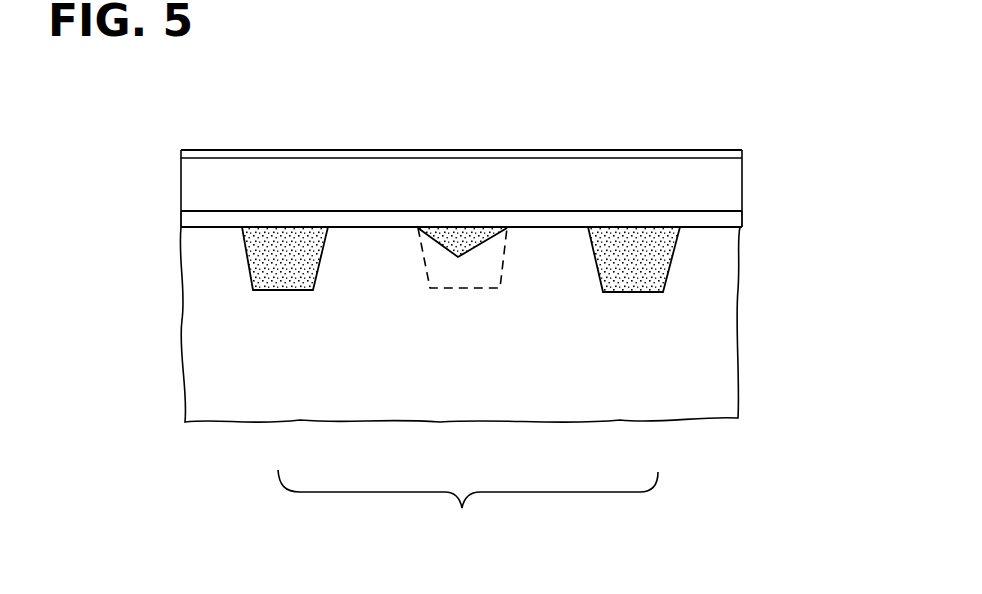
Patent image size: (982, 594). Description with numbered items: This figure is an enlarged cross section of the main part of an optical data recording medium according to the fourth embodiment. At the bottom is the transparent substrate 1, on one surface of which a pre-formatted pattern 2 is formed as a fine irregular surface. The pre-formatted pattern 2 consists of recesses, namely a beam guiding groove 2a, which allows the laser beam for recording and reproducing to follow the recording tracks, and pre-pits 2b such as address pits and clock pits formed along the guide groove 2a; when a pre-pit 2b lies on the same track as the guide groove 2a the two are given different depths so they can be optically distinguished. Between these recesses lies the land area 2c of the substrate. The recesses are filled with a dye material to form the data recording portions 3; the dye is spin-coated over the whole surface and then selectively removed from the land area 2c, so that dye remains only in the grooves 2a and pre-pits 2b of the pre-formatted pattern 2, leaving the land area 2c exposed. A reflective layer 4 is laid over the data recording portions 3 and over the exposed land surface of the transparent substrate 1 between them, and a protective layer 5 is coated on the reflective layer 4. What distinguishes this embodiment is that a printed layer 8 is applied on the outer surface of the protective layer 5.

The transparent substrate 1 is at (725, 357).
The pre-formatted pattern 2 is at (468, 508).
The beam guiding groove 2a is at (458, 258).
The pre-pit 2b is at (293, 290).
The land area 2c is at (208, 216).
The data recording portion 3 is at (277, 245).
The reflective layer 4 is at (735, 222).
The protective layer 5 is at (730, 185).
The printed layer 8 is at (673, 150).